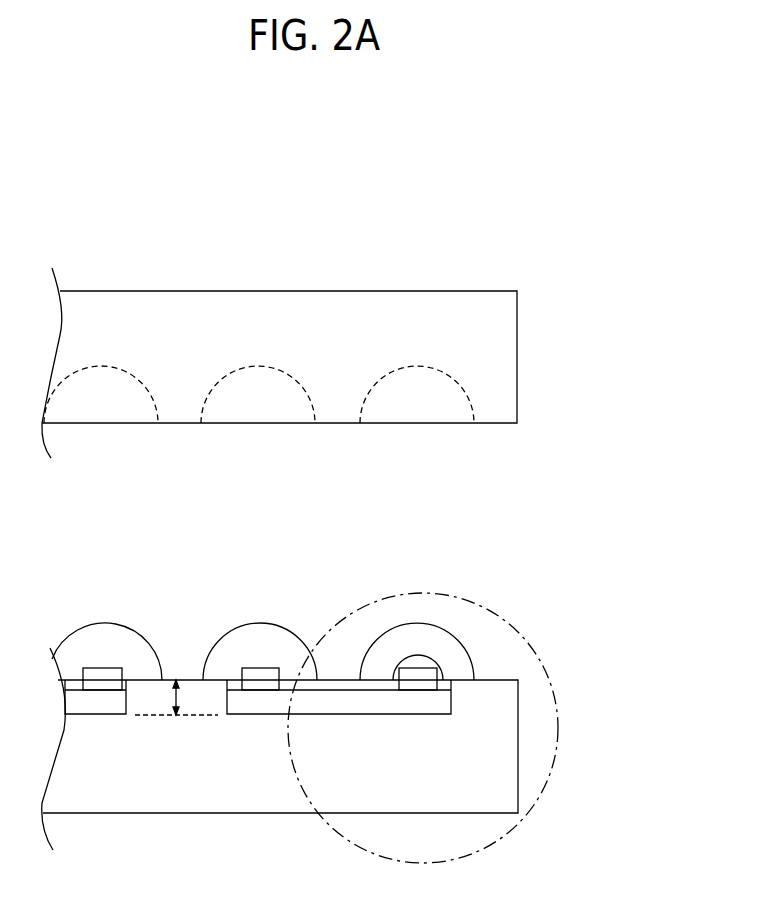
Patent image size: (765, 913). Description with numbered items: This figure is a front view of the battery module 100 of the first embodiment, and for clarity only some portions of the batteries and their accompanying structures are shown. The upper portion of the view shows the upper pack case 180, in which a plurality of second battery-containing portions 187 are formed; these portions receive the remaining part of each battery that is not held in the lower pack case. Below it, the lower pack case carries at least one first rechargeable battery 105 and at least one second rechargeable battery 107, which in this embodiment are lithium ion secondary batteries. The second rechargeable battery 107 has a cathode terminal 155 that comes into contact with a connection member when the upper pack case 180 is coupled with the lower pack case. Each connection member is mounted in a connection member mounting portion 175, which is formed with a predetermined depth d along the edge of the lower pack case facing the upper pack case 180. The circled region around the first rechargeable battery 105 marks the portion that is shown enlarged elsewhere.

The battery module 100 is at (311, 178).
The upper pack case 180 is at (343, 297).
The second battery-containing portion 187 is at (250, 367).
The connection member mounting portion 175 is at (203, 677).
The cathode terminal 155 is at (257, 669).
The second rechargeable battery 107 is at (262, 617).
The first rechargeable battery 105 is at (423, 617).